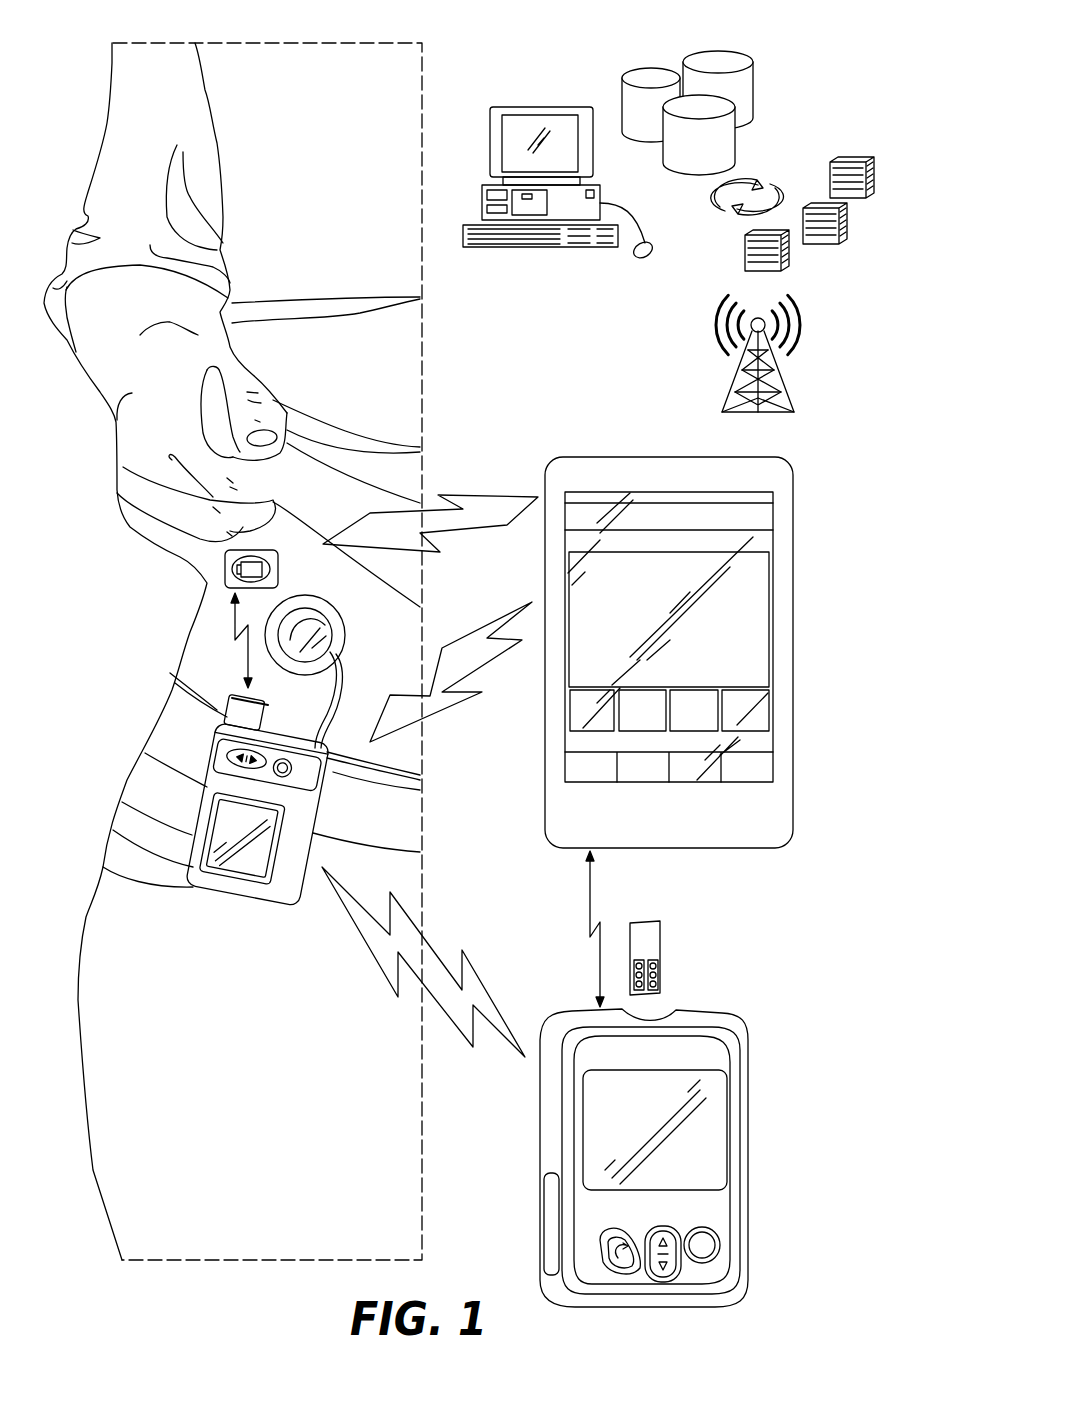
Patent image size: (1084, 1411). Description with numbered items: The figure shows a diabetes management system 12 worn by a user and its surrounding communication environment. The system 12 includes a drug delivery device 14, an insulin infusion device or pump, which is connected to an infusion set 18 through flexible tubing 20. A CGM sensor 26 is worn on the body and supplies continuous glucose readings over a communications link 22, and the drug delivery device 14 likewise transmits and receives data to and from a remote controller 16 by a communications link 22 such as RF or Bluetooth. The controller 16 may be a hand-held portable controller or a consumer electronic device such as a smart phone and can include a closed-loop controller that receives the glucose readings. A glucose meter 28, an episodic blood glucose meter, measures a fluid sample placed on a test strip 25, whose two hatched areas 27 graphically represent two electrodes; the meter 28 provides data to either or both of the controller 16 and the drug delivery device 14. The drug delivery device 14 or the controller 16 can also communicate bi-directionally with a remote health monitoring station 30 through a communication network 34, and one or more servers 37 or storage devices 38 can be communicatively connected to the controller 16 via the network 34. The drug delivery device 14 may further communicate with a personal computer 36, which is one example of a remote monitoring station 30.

The diabetes management system 12 is at (530, 399).
The drug delivery device 14 is at (205, 812).
The remote controller 16 is at (796, 604).
The infusion set 18 is at (300, 614).
The flexible tubing 20 is at (247, 692).
The communications link 22 is at (478, 497).
The test strip 25 is at (689, 929).
The CGM sensor 26 is at (225, 575).
The electrodes 27 is at (638, 958).
The glucose meter 28 is at (752, 1128).
The remote health monitoring station 30 is at (817, 109).
The communication network 34 is at (809, 359).
The personal computer 36 is at (537, 103).
The servers 37 is at (876, 229).
The storage devices 38 is at (665, 58).